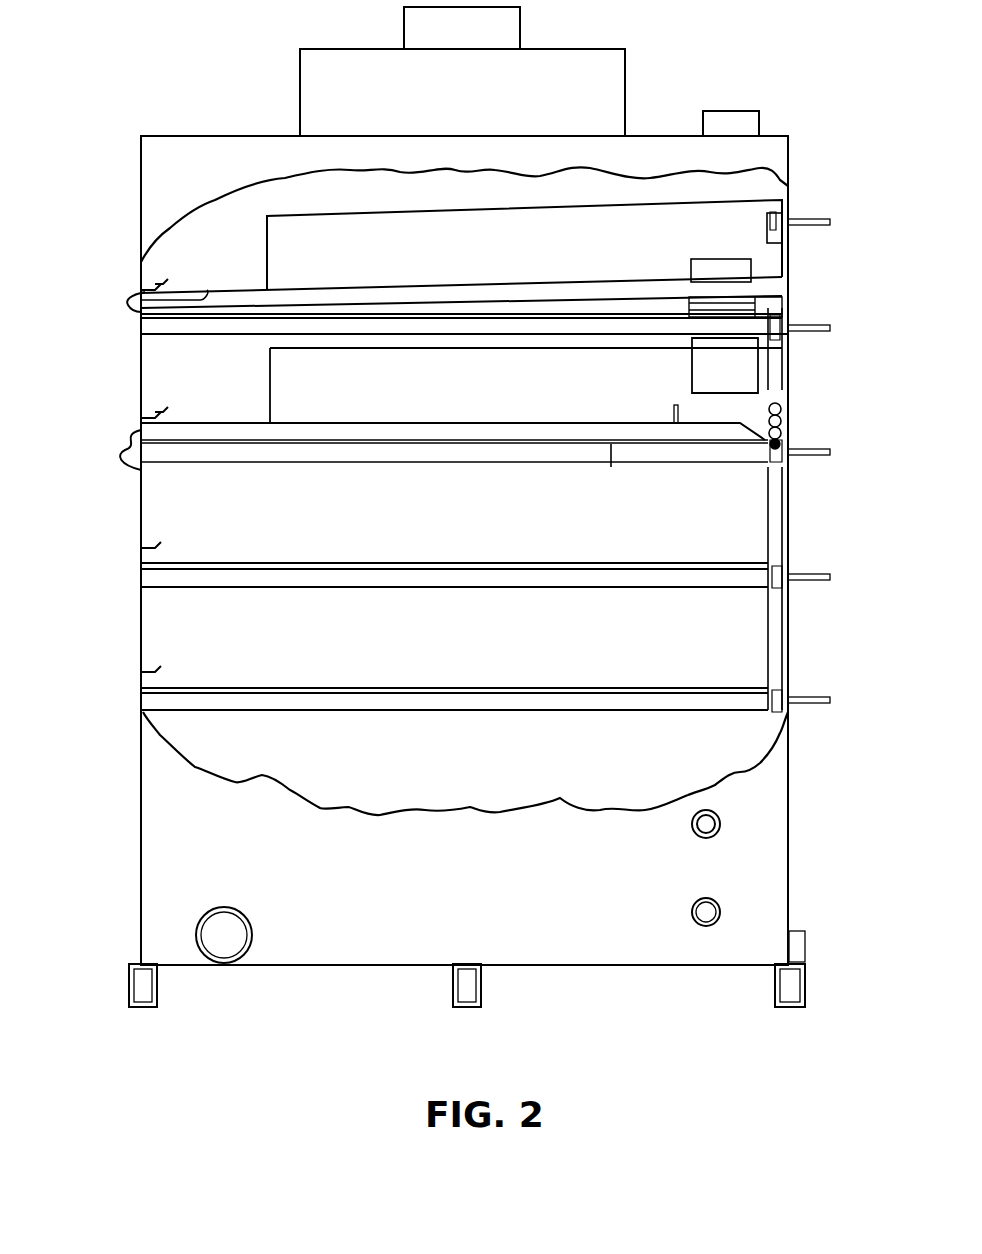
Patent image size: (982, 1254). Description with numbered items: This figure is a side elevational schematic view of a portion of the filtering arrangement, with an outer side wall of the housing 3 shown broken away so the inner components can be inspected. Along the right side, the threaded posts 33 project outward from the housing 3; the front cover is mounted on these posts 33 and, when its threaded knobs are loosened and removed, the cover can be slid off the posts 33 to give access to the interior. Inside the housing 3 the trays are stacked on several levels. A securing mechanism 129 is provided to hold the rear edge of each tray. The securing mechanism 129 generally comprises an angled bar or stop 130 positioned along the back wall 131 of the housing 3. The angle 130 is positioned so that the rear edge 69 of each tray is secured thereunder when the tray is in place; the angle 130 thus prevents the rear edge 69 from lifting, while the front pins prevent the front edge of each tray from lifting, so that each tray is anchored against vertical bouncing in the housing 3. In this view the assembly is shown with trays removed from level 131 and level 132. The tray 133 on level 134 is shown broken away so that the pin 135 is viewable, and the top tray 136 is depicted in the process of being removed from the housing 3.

The housing 3 is at (789, 776).
The threaded posts 33 is at (814, 218).
The rear edge 69 is at (207, 290).
The securing mechanism 129 is at (124, 290).
The angled bar 130 is at (155, 290).
The back wall 131 is at (462, 688).
The level 132 is at (462, 564).
The tray 133 is at (462, 424).
The level 134 is at (611, 467).
The pin 135 is at (782, 412).
The tray 136 is at (580, 284).